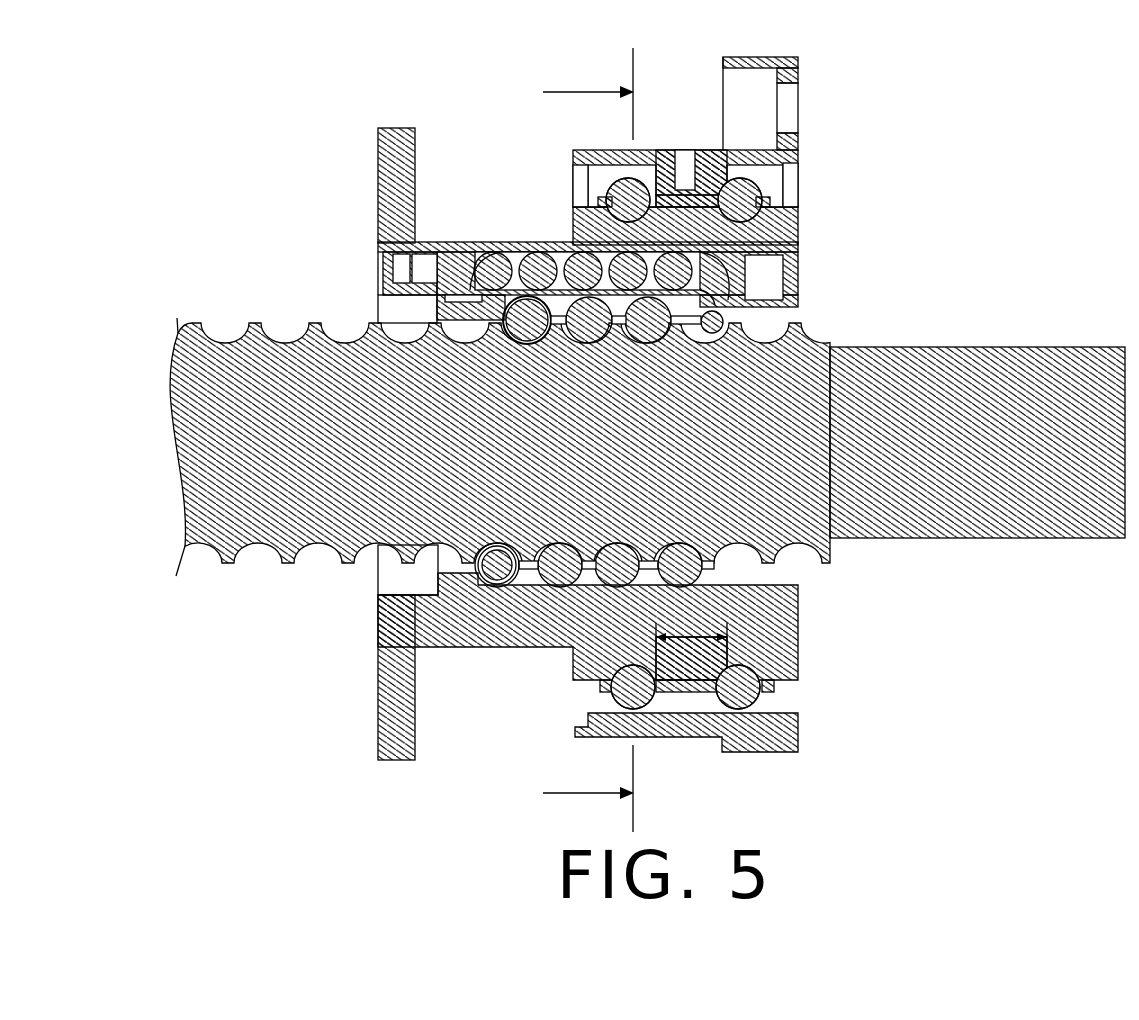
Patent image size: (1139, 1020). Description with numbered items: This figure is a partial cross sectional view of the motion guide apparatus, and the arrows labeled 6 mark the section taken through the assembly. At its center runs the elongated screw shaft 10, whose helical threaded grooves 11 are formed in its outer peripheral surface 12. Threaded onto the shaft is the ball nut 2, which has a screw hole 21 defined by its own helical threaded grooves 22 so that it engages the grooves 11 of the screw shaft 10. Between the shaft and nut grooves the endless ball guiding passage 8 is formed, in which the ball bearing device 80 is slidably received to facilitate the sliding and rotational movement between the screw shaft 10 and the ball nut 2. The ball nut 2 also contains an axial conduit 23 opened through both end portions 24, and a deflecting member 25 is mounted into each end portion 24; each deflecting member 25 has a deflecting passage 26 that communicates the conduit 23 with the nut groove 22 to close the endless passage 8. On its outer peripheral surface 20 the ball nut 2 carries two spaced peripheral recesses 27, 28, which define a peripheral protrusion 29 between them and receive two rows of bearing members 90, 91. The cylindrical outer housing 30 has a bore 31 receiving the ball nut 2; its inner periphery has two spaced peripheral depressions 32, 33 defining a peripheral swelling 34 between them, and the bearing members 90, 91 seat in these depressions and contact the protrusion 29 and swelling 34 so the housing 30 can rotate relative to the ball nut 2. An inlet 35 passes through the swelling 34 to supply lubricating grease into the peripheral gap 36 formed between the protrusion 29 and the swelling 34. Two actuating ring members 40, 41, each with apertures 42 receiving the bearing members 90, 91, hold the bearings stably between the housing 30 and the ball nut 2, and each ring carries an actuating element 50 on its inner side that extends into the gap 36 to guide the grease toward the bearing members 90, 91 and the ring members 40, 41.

The ball nut 2 is at (388, 725).
The section line 6- 6 is at (576, 440).
The endless ball guiding passage 8 is at (493, 573).
The screw shaft 10 is at (639, 464).
The helical threaded grooves 11 is at (257, 552).
The outer peripheral surface 12 is at (1052, 527).
The outer peripheral surface 20 is at (556, 648).
The screw hole 21 is at (380, 582).
The helical threaded grooves 22 is at (485, 578).
The conduit 23 is at (517, 252).
The end portions 24 is at (390, 195).
The deflecting member 25 is at (482, 293).
The deflecting passage 26 is at (410, 278).
The peripheral recess 27 is at (637, 712).
The peripheral recess 28 is at (757, 714).
The peripheral protrusion 29 is at (683, 692).
The outer housing 30 is at (790, 72).
The bore 31 is at (780, 178).
The peripheral depression 32 is at (672, 196).
The peripheral depression 33 is at (742, 150).
The peripheral swelling 34 is at (700, 692).
The inlet 35 is at (732, 160).
The peripheral gap 36 is at (745, 700).
The actuating ring member 40 is at (605, 210).
The actuating ring member 41 is at (772, 201).
The apertures 42 is at (618, 190).
The actuating element 50 is at (688, 160).
The ball bearing device 80 is at (702, 568).
The bearing members 90 is at (640, 182).
The bearing members 91 is at (760, 694).